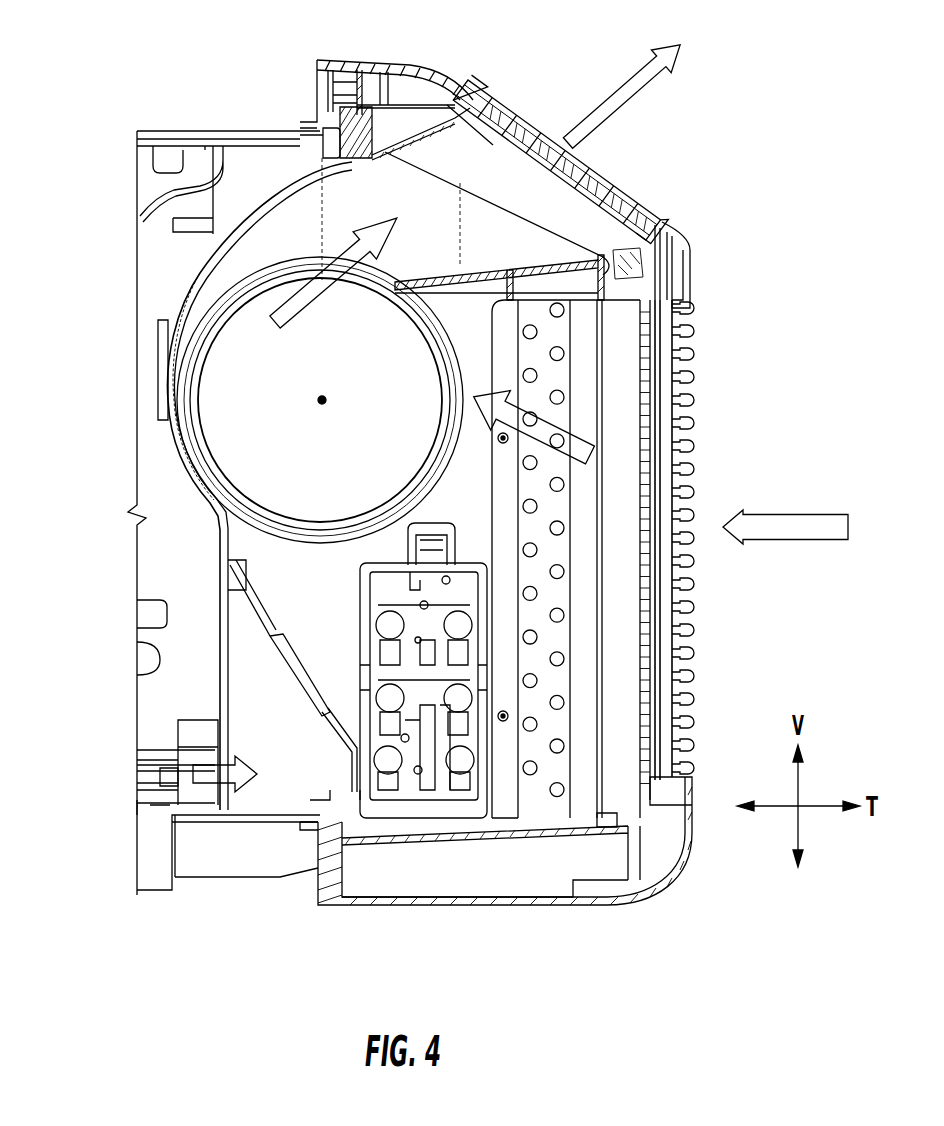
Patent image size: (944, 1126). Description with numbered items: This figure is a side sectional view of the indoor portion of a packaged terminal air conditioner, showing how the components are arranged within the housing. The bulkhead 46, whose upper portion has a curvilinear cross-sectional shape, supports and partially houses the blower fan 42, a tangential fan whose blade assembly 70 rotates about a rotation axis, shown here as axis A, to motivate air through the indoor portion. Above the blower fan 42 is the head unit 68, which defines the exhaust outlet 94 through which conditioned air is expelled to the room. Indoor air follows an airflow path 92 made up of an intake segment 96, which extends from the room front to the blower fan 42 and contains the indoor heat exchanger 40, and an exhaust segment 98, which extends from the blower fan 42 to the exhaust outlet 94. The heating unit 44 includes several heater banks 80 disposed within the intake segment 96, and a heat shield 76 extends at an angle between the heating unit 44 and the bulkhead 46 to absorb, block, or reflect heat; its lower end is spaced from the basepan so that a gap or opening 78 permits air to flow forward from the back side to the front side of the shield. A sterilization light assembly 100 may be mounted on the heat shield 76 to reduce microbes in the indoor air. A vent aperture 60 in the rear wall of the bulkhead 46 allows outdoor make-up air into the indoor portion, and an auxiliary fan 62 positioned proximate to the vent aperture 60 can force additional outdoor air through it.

The indoor heat exchanger 40 is at (560, 379).
The blower fan 42 is at (200, 374).
The blade assembly 70 is at (320, 400).
The heating unit 44 is at (490, 812).
The bulkhead 46 is at (178, 307).
The vent aperture 60 is at (216, 735).
The auxiliary fan 62 is at (185, 735).
The head unit 68 is at (400, 62).
The heat shield 76 is at (255, 600).
The gap or opening 78 is at (347, 800).
The heater bank 80 is at (468, 760).
The airflow path 92 is at (303, 216).
The exhaust outlet 94 is at (645, 193).
The intake segment 96 is at (494, 511).
The exhaust segment 98 is at (335, 269).
The sterilization light assembly 100 is at (303, 649).
The fan axis A is at (323, 403).